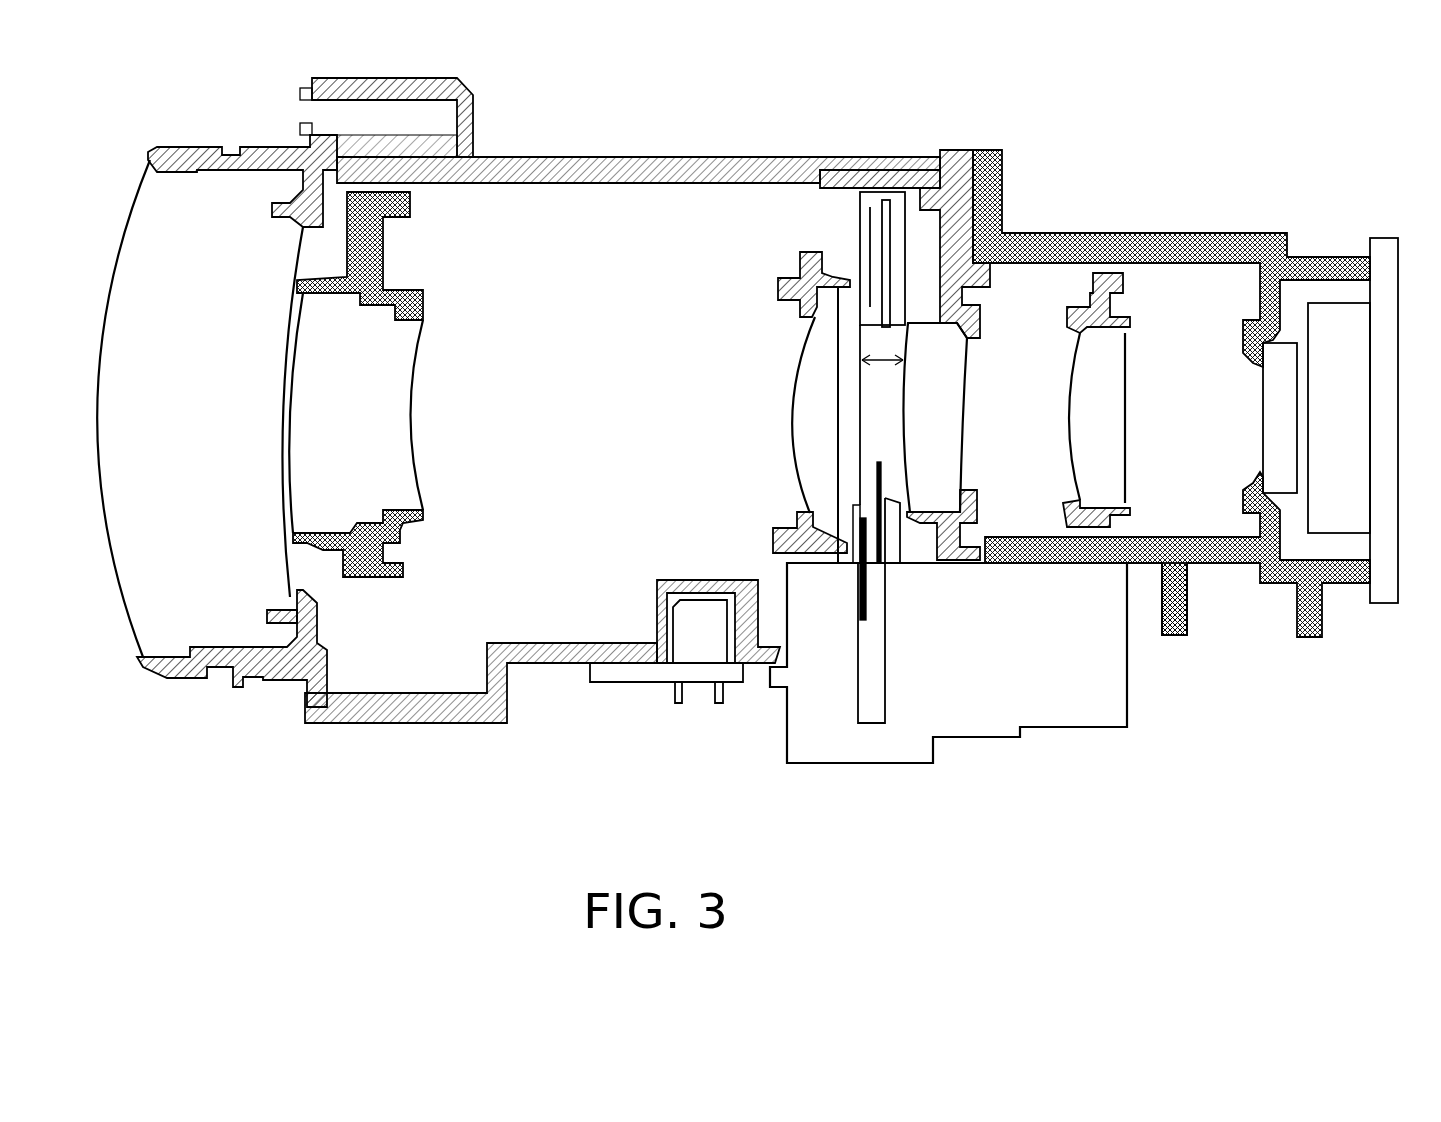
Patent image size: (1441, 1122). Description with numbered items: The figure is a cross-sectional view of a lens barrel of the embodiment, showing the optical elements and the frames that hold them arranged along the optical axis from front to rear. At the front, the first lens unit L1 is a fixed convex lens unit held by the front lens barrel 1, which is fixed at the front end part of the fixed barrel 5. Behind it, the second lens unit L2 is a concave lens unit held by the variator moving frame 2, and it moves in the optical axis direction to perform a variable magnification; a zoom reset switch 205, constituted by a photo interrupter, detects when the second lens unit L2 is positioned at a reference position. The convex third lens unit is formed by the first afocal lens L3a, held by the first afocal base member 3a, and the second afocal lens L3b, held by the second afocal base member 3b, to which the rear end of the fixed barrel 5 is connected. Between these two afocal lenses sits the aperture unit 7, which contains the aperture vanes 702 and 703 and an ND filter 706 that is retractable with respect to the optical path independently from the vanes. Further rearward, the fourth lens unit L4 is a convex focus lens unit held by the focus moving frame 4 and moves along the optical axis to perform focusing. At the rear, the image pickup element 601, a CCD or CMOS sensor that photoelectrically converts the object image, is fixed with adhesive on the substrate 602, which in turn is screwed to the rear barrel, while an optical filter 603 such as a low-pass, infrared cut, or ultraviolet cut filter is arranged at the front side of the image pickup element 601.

The front lens barrel 1 is at (247, 162).
The variator moving frame 2 is at (373, 225).
The first afocal base member 3a is at (810, 279).
The second afocal base member 3b is at (958, 205).
The focus moving frame 4 is at (1097, 302).
The fixed barrel 5 is at (625, 170).
The aperture unit 7 is at (998, 667).
The zoom reset switch 205 is at (690, 659).
The image pickup element 601 is at (1355, 367).
The substrate 602 is at (1378, 400).
The optical filter 603 is at (1278, 362).
The aperture vane 702 is at (863, 580).
The aperture vane 703 is at (868, 232).
The ND filter 706 is at (882, 545).
The first lens unit L1 is at (226, 212).
The second lens unit L2 is at (365, 450).
The first afocal lens L3a is at (807, 420).
The second afocal lens L3b is at (943, 472).
The fourth lens unit L4 is at (1112, 440).